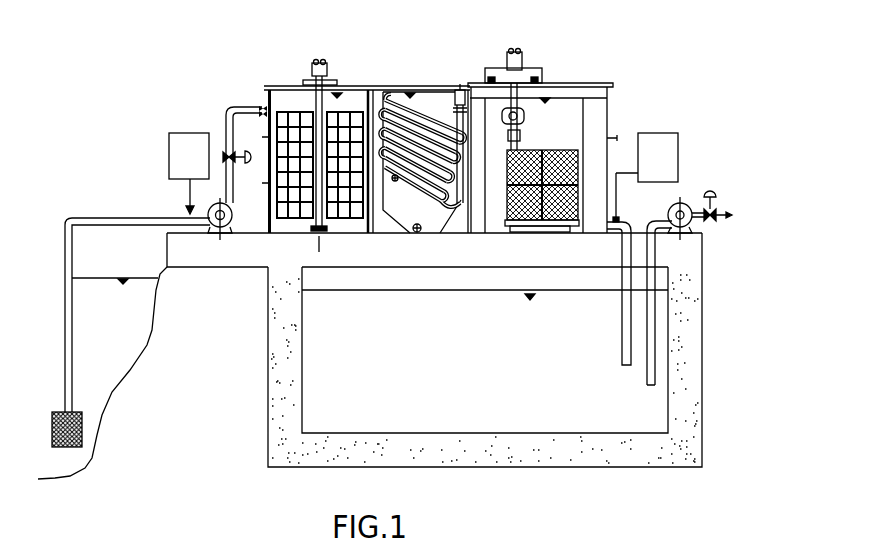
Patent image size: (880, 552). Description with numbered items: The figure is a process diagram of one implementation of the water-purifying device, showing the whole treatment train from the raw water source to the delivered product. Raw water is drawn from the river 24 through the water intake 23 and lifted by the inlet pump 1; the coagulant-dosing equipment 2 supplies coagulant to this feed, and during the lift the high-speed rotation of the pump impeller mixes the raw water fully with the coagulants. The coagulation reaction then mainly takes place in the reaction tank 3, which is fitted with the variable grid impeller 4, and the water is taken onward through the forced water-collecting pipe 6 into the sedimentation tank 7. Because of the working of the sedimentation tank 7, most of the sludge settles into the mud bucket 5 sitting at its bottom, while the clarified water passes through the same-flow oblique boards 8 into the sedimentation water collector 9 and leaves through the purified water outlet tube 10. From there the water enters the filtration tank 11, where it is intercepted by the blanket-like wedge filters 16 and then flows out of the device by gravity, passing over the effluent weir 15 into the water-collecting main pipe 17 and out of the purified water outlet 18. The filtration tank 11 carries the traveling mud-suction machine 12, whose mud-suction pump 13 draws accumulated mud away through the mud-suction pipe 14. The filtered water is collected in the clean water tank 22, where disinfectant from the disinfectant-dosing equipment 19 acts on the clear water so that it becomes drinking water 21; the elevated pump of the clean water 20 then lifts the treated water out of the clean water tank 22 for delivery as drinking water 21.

The inlet pump 1 is at (213, 205).
The coagulant-dosing equipment 2 is at (203, 133).
The reaction tank 3 is at (287, 102).
The variable grid impeller 4 is at (310, 112).
The mud bucket 5 is at (362, 88).
The forced water-collecting pipe 6 is at (403, 217).
The sedimentation tank 7 is at (410, 92).
The same-flow oblique boards 8 is at (417, 100).
The sedimentation water collector 9 is at (455, 112).
The purified water outlet tube 10 is at (461, 88).
The filtration tank 11 is at (496, 140).
The traveling mud-suction machine 12 is at (527, 70).
The mud-suction pump 13 is at (525, 140).
The mud-suction pipe 14 is at (543, 150).
The effluent weir 15 is at (611, 139).
The blanket-like wedge filters 16 is at (616, 214).
The water-collecting main pipe 17 is at (640, 172).
The purified water outlet 18 is at (668, 148).
The disinfectant-dosing equipment 19 is at (653, 221).
The elevated pump of the clean water 20 is at (686, 206).
The drinking water 21 is at (727, 206).
The clean water tank 22 is at (485, 367).
The water intake 23 is at (82, 428).
The river 24 is at (121, 315).